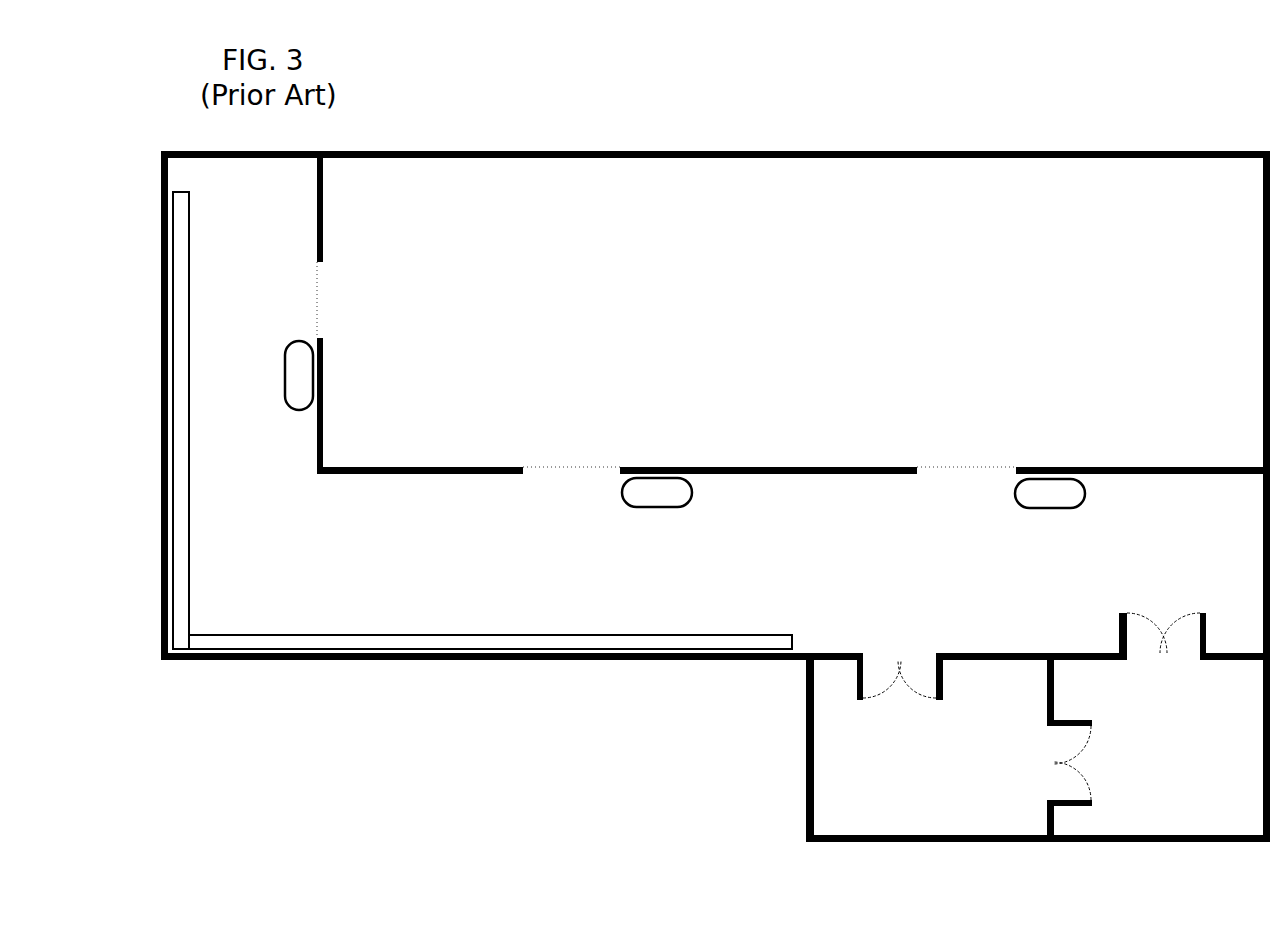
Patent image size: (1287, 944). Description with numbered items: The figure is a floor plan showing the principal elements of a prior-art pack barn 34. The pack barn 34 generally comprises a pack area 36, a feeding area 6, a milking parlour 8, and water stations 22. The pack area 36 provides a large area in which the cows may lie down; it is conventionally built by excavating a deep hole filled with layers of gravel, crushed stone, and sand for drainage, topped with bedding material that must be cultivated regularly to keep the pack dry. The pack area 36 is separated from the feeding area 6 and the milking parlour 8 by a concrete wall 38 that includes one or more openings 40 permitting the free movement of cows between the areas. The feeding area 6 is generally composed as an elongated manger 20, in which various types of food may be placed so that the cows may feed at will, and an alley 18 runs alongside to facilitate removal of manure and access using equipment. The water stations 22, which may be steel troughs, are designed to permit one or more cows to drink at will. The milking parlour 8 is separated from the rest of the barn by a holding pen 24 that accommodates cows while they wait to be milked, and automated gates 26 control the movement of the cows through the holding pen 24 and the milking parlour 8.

The pack barn 34 is at (612, 133).
The pack area 36 is at (741, 315).
The concrete wall 38 is at (323, 215).
The openings 40 is at (322, 290).
The alley 18 is at (606, 407).
The elongated manger 20 is at (183, 408).
The water stations 22 is at (297, 396).
The holding pen 24 is at (916, 751).
The milking parlour 8 is at (1188, 726).
The automated gates 26 is at (900, 694).
The feeding area 6 is at (220, 334).